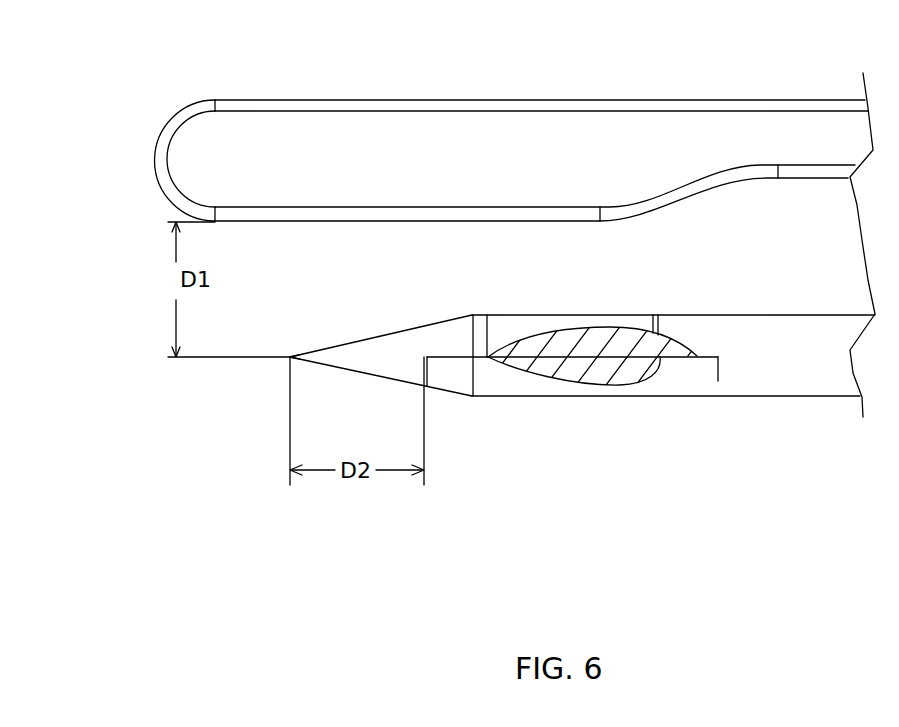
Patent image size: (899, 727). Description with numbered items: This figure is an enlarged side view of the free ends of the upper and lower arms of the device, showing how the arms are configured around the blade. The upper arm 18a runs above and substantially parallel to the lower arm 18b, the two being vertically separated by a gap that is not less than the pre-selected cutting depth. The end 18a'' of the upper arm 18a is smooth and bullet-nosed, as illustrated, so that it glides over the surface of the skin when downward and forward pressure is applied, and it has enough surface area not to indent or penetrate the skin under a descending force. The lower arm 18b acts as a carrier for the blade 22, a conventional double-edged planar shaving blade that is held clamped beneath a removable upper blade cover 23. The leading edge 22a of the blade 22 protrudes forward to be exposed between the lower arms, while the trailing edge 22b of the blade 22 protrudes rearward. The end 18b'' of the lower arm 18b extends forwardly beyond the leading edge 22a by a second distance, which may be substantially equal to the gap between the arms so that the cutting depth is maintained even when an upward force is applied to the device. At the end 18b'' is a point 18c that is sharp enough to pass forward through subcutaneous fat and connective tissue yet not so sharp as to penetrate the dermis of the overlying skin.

The upper arm 18a is at (474, 135).
The end of upper arm 18a'' is at (147, 160).
The lower arm 18b is at (521, 417).
The end of lower arm 18b'' is at (381, 369).
The point 18c is at (290, 357).
The blade 22 is at (595, 467).
The leading edge 22a is at (428, 358).
The trailing edge 22b is at (718, 381).
The blade cover 23 is at (637, 330).